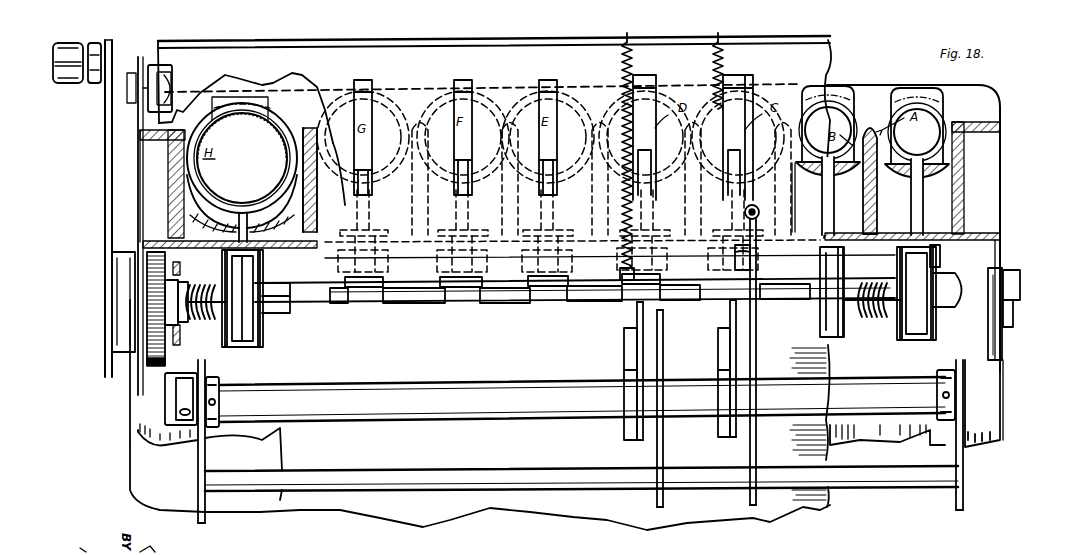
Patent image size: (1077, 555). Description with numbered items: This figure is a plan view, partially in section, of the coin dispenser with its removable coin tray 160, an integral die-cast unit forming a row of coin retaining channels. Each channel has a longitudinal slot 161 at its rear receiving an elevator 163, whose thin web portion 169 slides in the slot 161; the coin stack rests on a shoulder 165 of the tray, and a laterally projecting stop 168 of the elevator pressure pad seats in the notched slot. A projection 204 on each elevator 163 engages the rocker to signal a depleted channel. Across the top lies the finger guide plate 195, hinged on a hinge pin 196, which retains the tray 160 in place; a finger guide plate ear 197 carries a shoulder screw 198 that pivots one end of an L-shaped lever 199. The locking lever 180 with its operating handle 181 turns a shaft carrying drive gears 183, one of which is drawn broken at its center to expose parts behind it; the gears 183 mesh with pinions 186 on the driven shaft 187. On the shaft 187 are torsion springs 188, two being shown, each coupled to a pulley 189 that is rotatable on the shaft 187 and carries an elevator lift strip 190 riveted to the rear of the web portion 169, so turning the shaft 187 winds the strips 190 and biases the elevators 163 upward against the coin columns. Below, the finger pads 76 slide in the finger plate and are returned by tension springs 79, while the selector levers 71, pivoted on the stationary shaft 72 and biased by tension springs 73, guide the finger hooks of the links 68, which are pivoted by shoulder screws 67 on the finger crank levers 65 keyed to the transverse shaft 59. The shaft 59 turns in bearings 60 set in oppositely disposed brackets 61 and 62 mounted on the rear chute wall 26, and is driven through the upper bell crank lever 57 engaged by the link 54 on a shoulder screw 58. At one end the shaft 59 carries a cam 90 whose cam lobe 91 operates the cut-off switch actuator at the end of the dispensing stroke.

The finger guide plate 195 is at (512, 40).
The tension spring 79 is at (622, 48).
The finger pad 76 is at (656, 80).
The laterally projecting stop 168 is at (264, 90).
The elevator 163 is at (283, 137).
The shoulder 165 is at (212, 195).
The web portion 169 is at (283, 205).
The longitudinal slot 161 is at (306, 188).
The removable coin tray 160 is at (970, 160).
The shoulder screw 198 is at (134, 65).
The finger guide plate ear 197 is at (158, 72).
The operating handle 181 is at (90, 86).
The locking lever 180 is at (105, 156).
The L-shaped lever 199 is at (153, 162).
The tension spring 73 is at (756, 203).
The shoulder screw 67 is at (624, 362).
The pinion 186 is at (155, 282).
The projection 204 is at (222, 272).
The driven shaft 187 is at (283, 282).
The torsion spring 188 is at (208, 315).
The elevator lift strip 190 is at (232, 347).
The pulley 189 is at (260, 347).
The hinge pin 196 is at (370, 292).
The link 68 is at (636, 318).
The finger crank lever 65 is at (624, 435).
The selector lever 71 is at (757, 353).
The shoulder screw 58 is at (1020, 290).
The link 54 is at (1013, 316).
The upper bell crank lever 57 is at (998, 340).
The drive gear 183 is at (150, 366).
The cam lobe 91 is at (176, 396).
The bearing 60 is at (217, 406).
The shaft 59 is at (325, 390).
The stationary shaft 72 is at (308, 478).
The bracket 62 is at (205, 510).
The cam 90 is at (178, 428).
The bracket 61 is at (964, 496).
The rear chute wall 26 is at (604, 512).